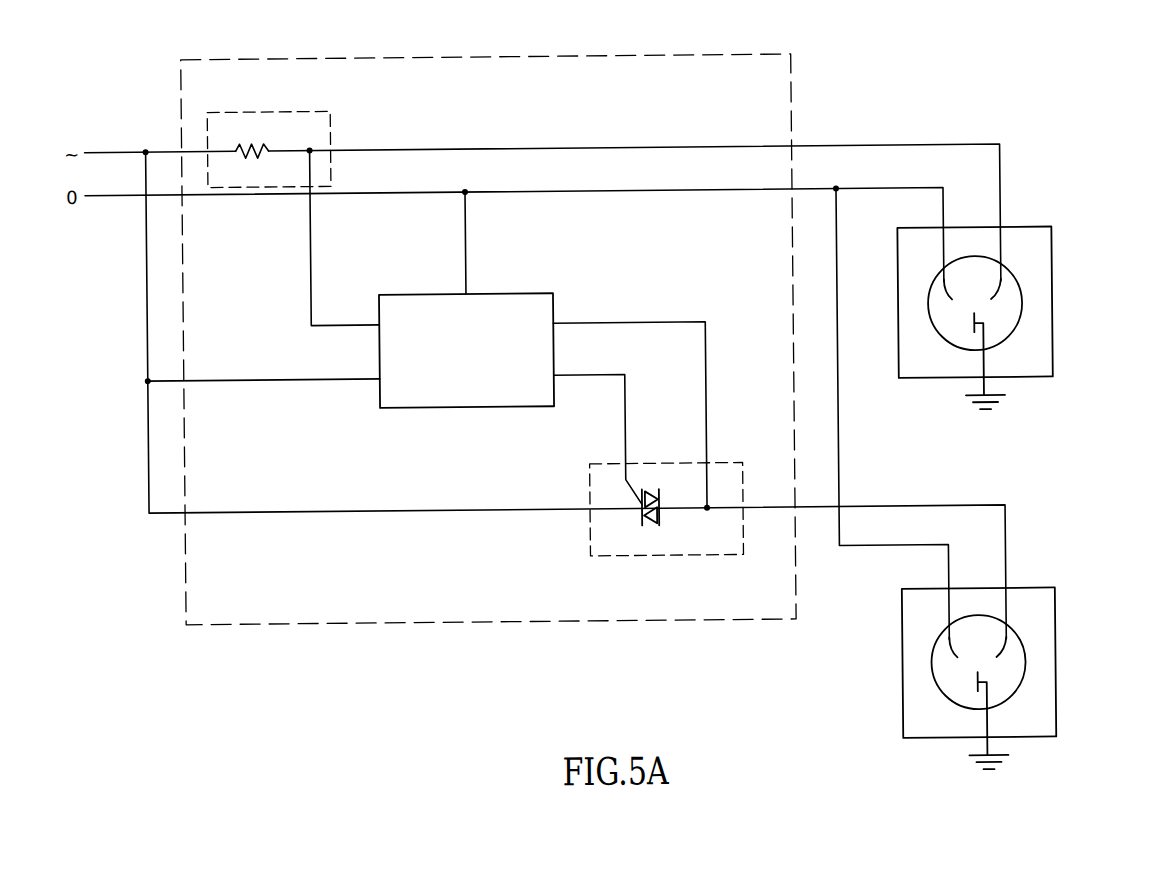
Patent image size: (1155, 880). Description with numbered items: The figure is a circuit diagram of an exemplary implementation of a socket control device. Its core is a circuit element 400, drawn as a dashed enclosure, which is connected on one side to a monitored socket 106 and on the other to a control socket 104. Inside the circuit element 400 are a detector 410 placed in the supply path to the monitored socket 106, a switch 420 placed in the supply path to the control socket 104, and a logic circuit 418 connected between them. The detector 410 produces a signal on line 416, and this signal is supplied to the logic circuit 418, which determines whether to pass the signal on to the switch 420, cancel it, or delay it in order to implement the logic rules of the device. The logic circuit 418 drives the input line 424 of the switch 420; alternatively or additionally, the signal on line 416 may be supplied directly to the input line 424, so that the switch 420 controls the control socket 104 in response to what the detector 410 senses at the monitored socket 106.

The circuit element 400 is at (420, 624).
The detector 410 is at (270, 109).
The line 416 is at (312, 252).
The logic circuit 418 is at (501, 293).
The input line 424 is at (625, 429).
The switch 420 is at (649, 557).
The monitored socket 106 is at (1053, 306).
The control socket 104 is at (1053, 665).